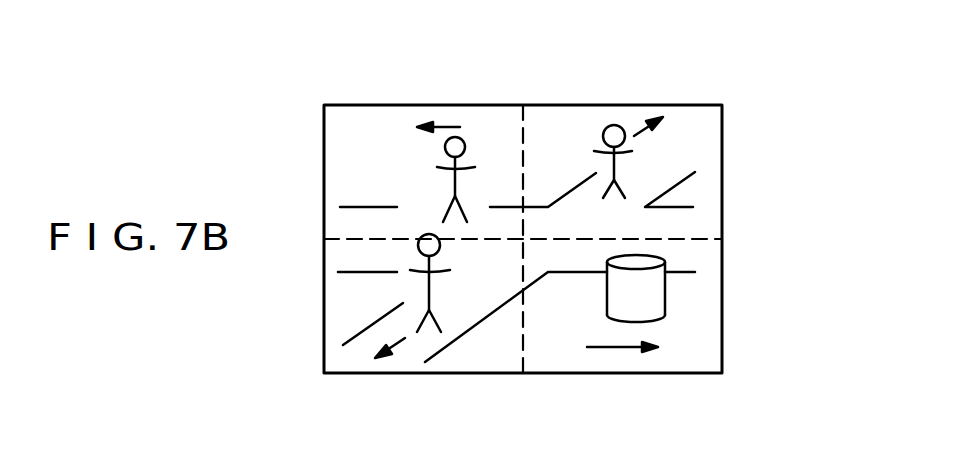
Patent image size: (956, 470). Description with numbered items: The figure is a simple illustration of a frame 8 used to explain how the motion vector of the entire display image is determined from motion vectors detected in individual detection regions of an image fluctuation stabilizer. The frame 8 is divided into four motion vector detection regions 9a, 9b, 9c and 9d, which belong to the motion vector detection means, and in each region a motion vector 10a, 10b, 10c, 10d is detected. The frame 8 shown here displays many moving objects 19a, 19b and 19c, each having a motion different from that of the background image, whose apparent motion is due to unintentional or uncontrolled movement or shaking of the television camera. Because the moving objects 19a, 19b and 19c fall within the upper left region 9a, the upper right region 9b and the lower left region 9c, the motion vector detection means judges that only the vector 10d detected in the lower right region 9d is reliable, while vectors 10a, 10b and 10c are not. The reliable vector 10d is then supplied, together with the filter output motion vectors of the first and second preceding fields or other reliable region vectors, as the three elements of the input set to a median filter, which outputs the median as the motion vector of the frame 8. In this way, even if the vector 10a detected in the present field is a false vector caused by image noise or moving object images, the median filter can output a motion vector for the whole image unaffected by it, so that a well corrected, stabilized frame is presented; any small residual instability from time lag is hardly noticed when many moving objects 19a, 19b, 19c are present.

The frame 8 is at (715, 105).
The motion vector detection region 9a is at (340, 158).
The motion vector detection region 9b is at (702, 147).
The motion vector detection region 9c is at (340, 300).
The motion vector detection region 9d is at (703, 328).
The motion vector 10a is at (450, 125).
The motion vector 10b is at (636, 130).
The motion vector 10c is at (397, 345).
The motion vector 10d is at (622, 348).
The moving object 19a is at (466, 136).
The moving object 19b is at (613, 124).
The moving object 19c is at (425, 328).